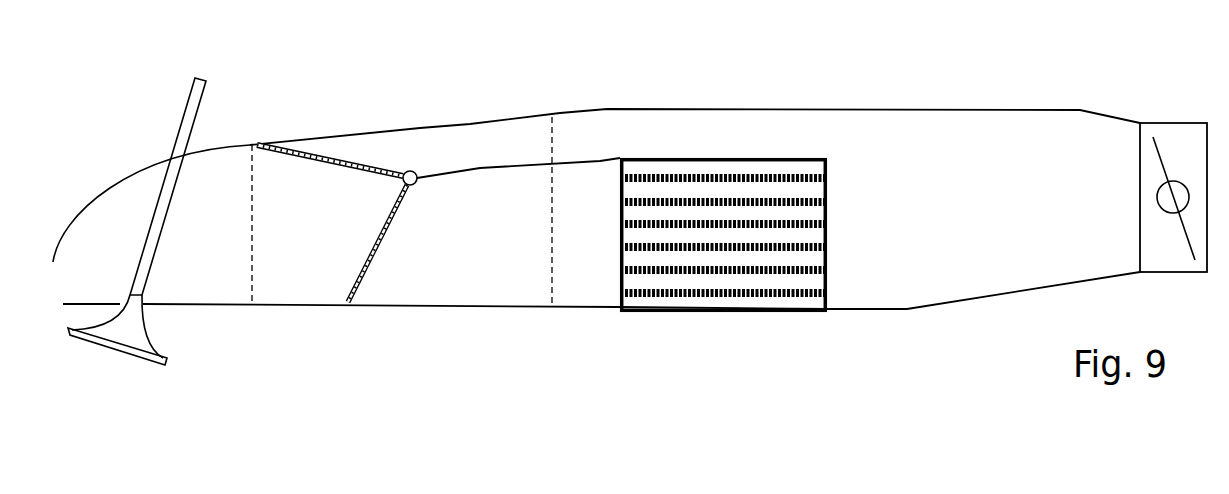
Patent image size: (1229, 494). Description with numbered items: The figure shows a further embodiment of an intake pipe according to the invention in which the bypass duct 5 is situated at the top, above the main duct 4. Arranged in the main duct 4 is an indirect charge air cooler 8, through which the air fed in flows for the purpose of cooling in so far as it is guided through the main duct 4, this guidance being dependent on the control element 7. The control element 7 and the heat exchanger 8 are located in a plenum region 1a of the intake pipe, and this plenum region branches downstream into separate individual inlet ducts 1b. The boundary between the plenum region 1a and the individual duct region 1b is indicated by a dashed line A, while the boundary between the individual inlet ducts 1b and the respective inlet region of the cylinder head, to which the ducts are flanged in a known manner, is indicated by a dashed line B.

The plenum region 1a is at (651, 112).
The inlet ducts 1b is at (462, 140).
The main duct 4 is at (510, 270).
The bypass duct 5 is at (698, 145).
The control element 7 is at (347, 157).
The indirect charge air cooler 8 is at (710, 275).
The dashed line A is at (551, 153).
The dashed line B is at (250, 255).